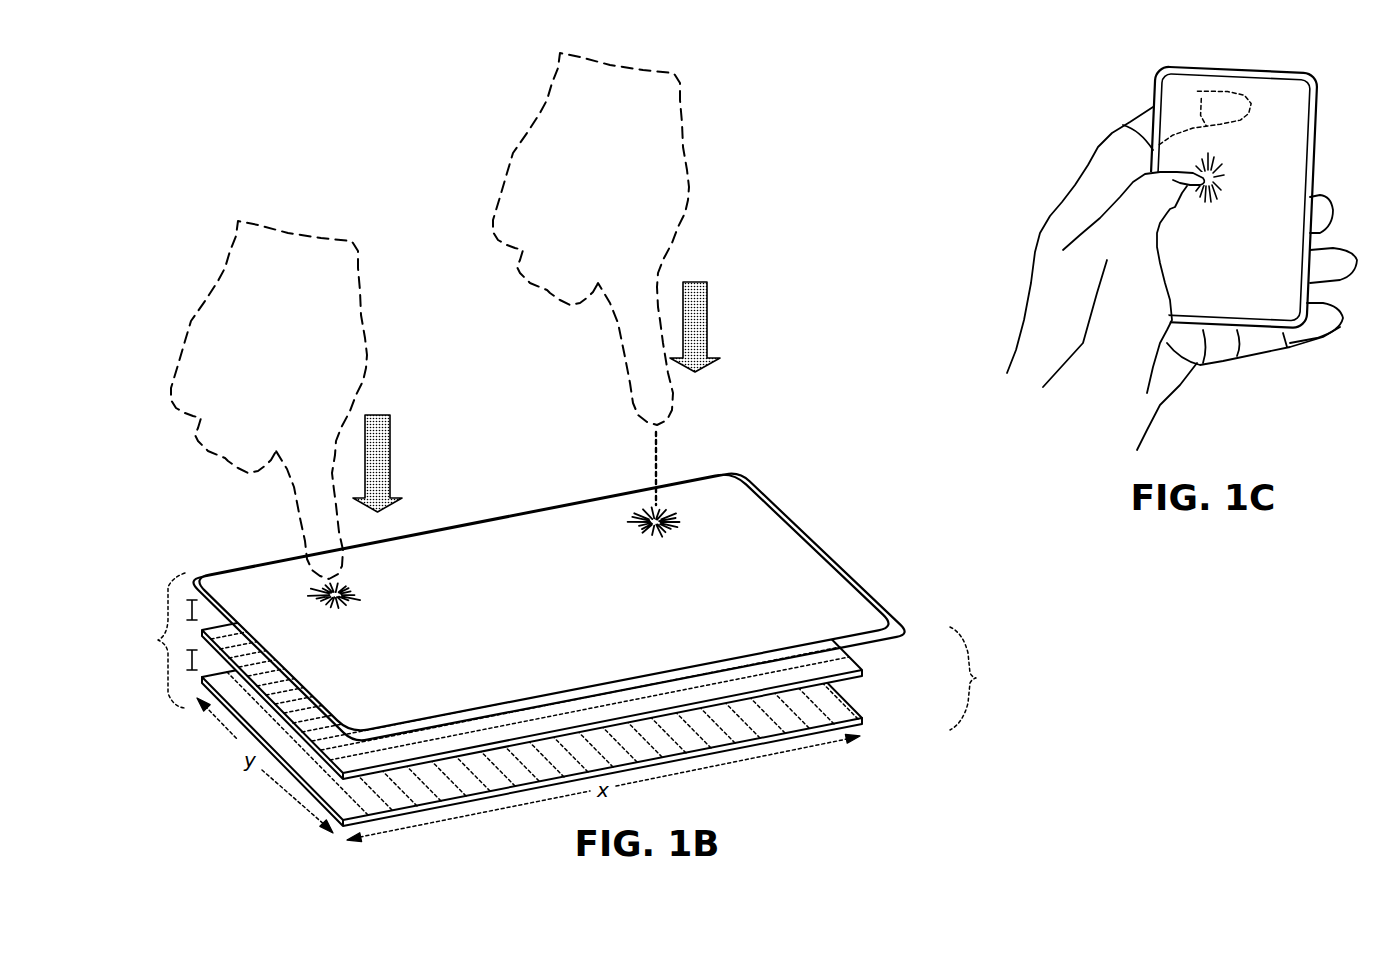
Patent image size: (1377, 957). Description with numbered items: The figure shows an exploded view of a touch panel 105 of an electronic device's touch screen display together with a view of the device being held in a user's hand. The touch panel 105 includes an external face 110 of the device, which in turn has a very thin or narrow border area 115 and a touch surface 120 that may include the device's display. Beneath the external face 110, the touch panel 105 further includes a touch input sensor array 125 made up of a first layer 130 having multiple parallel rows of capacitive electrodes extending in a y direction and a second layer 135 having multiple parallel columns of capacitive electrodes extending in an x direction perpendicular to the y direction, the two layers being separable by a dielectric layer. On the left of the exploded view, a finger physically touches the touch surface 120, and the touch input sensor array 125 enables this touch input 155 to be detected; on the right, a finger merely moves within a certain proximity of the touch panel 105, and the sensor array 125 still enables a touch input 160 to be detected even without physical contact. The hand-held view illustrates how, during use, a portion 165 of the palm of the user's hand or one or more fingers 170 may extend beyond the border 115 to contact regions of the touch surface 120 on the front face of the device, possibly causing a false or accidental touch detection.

In FIG. 1B, the touch panel 105 is at (157, 640).
In FIG. 1B, the external face 110 is at (818, 542).
In FIG. 1B, the touch input sensor array 125 is at (980, 680).
In FIG. 1B, the first layer 130 is at (868, 667).
In FIG. 1B, the second layer 135 is at (868, 716).
In FIG. 1B, the touch input 155 is at (297, 575).
In FIG. 1B, the touch input 160 is at (613, 512).
In FIG. 1C, the border area 115 is at (1157, 93).
In FIG. 1C, the touch surface 120 is at (1262, 148).
In FIG. 1C, the portion of the palm 165 is at (1176, 275).
In FIG. 1C, the fingers 170 is at (1316, 348).